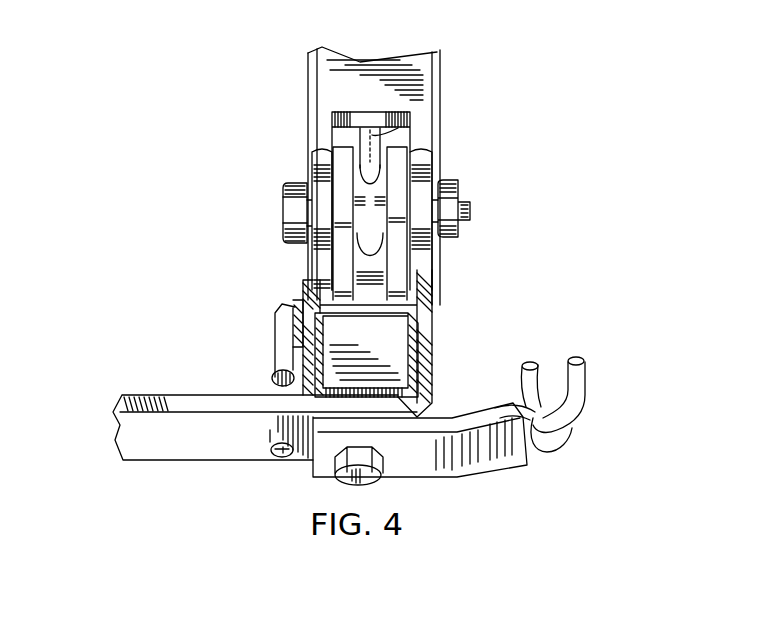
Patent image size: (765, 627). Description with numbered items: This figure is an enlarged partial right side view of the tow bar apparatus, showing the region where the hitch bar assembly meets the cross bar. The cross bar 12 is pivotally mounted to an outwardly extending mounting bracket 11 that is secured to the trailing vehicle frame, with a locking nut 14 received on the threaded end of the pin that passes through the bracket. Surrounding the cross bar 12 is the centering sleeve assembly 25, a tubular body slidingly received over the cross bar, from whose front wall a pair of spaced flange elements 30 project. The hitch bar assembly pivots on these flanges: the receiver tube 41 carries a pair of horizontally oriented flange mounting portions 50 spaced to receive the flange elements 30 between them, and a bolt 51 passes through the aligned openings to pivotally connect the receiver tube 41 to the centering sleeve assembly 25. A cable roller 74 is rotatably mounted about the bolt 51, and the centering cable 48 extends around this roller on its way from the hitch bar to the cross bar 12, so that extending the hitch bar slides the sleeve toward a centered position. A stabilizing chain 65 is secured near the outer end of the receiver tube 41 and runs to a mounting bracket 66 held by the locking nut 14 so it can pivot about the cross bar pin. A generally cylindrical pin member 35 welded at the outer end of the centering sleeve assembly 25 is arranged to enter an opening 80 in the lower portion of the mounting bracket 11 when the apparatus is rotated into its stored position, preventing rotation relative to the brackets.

The mounting bracket 11 is at (142, 395).
The cross bar 12 is at (380, 354).
The locking nut 14 is at (370, 478).
The centering sleeve assembly 25 is at (434, 296).
The flange elements 30 is at (347, 185).
The pin member 35 is at (270, 347).
The receiver tube 41 is at (318, 72).
The centering cable 48 is at (410, 121).
The flange mounting portions 50 is at (318, 132).
The bolt 51 is at (291, 221).
The stabilizing chains 65 is at (582, 388).
The mounting brackets 66 is at (495, 455).
The cable roller 74 is at (372, 222).
The opening 80 is at (283, 457).